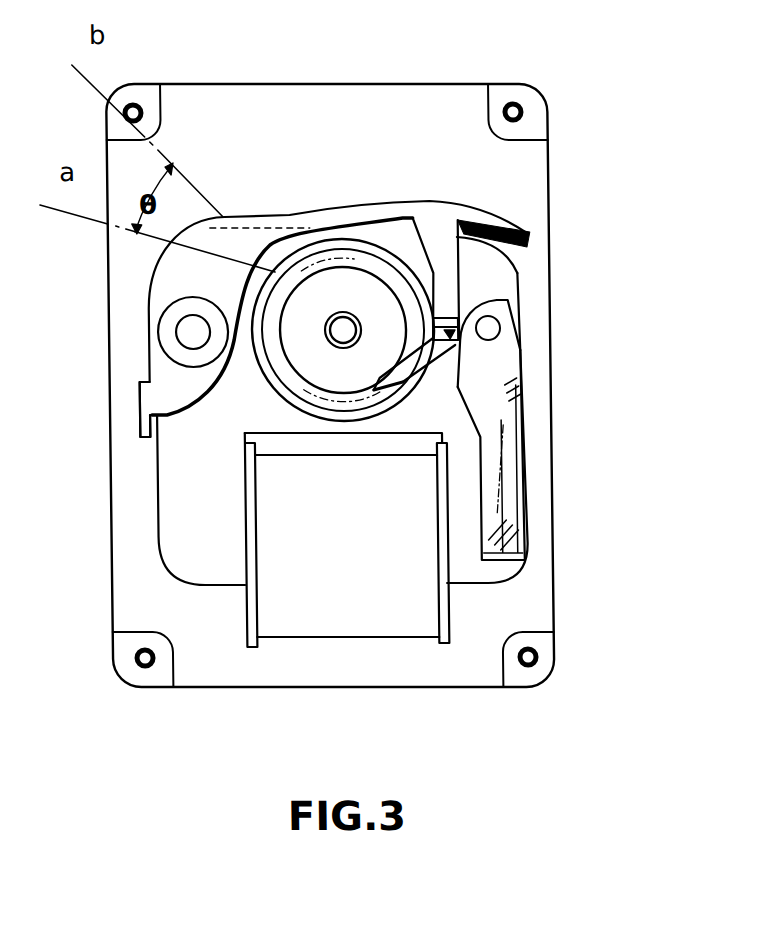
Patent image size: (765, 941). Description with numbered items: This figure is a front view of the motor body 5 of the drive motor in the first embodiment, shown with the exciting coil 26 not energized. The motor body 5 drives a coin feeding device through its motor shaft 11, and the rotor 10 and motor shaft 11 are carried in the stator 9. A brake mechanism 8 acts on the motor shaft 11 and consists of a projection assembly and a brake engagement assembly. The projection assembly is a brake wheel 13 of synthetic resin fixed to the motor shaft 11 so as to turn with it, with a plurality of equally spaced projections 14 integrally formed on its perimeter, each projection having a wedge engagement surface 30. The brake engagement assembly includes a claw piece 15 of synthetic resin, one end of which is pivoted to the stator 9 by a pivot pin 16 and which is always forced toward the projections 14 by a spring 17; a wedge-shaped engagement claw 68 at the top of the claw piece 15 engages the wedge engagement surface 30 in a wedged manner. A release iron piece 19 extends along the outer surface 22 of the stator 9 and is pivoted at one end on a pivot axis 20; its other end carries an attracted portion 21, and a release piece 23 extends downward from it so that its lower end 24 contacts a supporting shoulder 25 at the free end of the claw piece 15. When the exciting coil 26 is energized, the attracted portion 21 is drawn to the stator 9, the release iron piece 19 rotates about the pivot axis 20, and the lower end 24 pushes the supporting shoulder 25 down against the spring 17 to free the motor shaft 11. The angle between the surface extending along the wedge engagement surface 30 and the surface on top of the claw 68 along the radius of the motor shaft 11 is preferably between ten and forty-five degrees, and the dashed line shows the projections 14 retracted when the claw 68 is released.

The motor body 5 is at (292, 393).
The brake mechanism 8 is at (537, 395).
The stator 9 is at (166, 512).
The rotor 10 is at (304, 237).
The motor shaft 11 is at (353, 318).
The brake wheel 13 is at (344, 280).
The projections 14 is at (284, 217).
The claw piece 15 is at (496, 350).
The pivot pin 16 is at (491, 328).
The spring 17 is at (511, 497).
The release iron piece 19 is at (135, 402).
The pivot axis 20 is at (174, 336).
The attracted portion 21 is at (494, 213).
The outer surface 22 is at (402, 238).
The release piece 23 is at (444, 280).
The lower end 24 is at (451, 300).
The supporting shoulder 25 is at (439, 340).
The exciting coil 26 is at (364, 617).
The wedge engagement surface 30 is at (249, 292).
The wedge-shaped engagement claw 68 is at (392, 397).